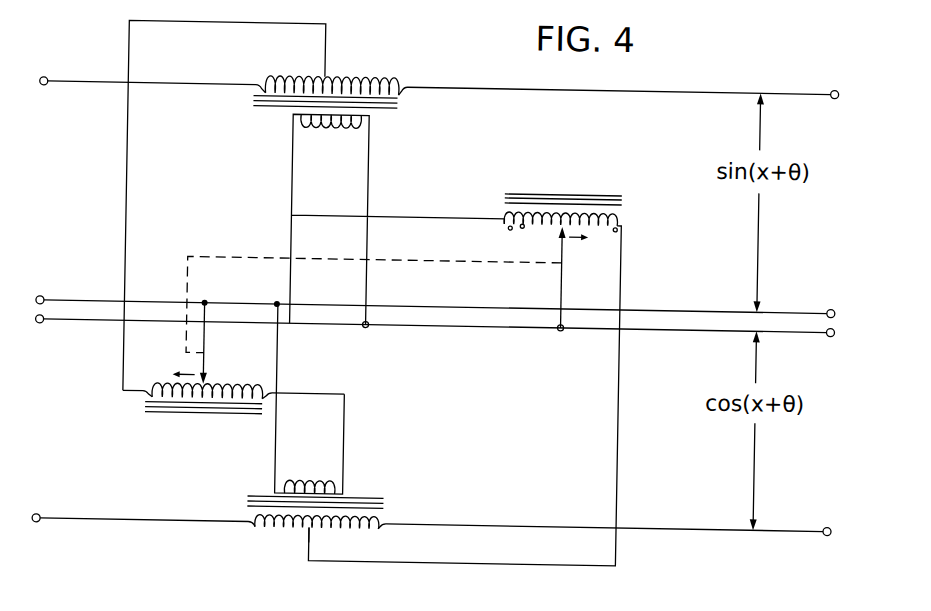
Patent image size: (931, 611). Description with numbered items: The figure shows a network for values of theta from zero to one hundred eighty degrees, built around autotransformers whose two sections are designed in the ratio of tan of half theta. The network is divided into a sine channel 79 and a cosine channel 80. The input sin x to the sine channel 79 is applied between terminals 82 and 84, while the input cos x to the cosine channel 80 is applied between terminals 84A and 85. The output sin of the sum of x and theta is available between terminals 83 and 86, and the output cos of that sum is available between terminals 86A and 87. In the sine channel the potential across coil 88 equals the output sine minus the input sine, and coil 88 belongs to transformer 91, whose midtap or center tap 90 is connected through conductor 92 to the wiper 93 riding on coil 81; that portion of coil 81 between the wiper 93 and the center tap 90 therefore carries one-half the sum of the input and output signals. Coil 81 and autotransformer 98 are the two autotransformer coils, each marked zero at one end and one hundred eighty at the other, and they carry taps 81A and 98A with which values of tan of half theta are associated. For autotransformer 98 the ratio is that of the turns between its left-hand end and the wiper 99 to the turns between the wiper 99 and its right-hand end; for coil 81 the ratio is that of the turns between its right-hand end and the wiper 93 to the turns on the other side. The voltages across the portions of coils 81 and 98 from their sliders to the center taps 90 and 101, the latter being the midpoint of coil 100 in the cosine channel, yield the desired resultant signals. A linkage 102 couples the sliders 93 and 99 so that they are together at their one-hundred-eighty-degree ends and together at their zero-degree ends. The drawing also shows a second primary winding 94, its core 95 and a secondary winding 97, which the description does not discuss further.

The sine channel 79 is at (86, 189).
The cosine channel 80 is at (86, 444).
The coil 81 is at (234, 379).
The tap 81A is at (252, 388).
The terminal 82 is at (41, 84).
The terminal 83 is at (858, 74).
The terminal 84 is at (42, 303).
The terminal 84A is at (42, 329).
The terminal 85 is at (44, 521).
The terminal 86 is at (860, 283).
The terminal 86A is at (836, 327).
The terminal 87 is at (836, 521).
The coil 88 is at (355, 184).
The center tap 90 is at (326, 80).
The transformer 91 is at (245, 105).
The conductor 92 is at (127, 218).
The wiper 93 is at (210, 372).
The primary winding 94 is at (320, 484).
The transformer core 95 is at (392, 502).
The secondary winding 97 is at (331, 132).
The autotransformer 98 is at (465, 372).
The tap 98A is at (523, 228).
The wiper 99 is at (565, 244).
The coil 100 is at (266, 532).
The center tap 101 is at (316, 532).
The linkage 102 is at (264, 258).